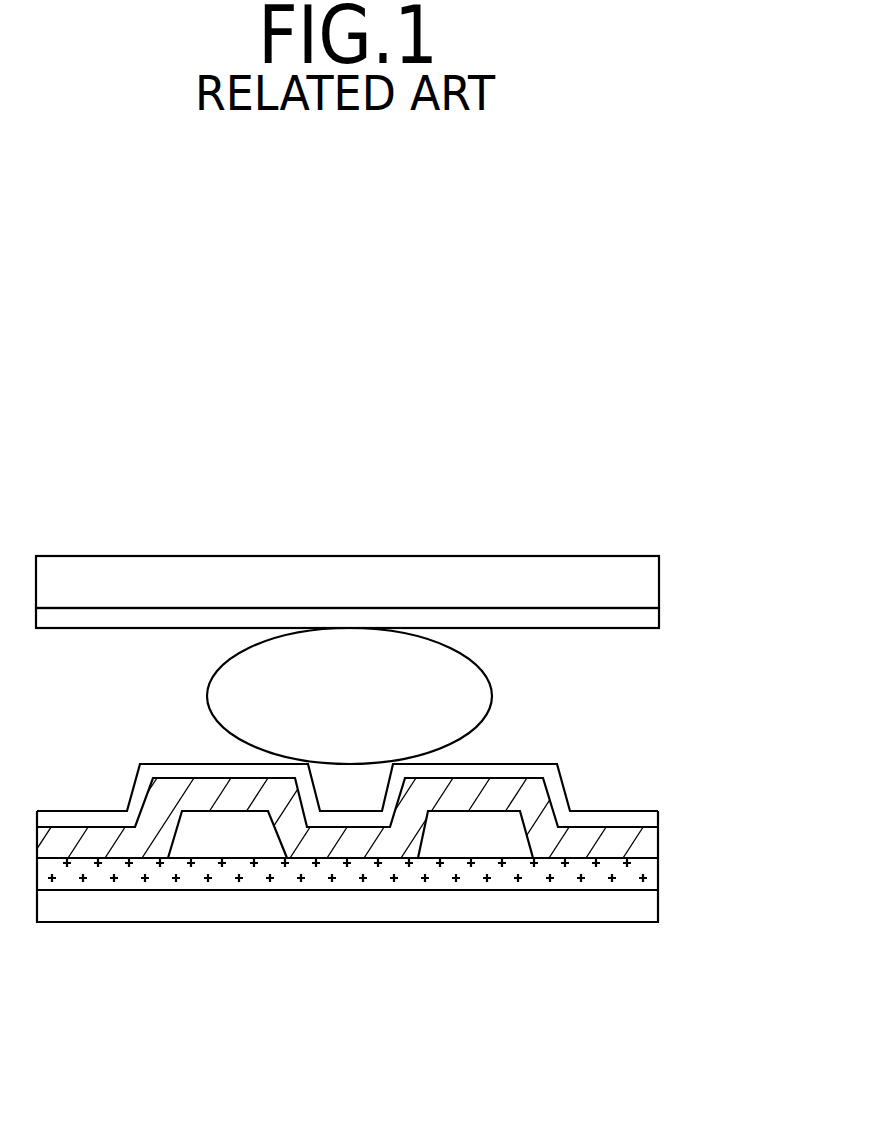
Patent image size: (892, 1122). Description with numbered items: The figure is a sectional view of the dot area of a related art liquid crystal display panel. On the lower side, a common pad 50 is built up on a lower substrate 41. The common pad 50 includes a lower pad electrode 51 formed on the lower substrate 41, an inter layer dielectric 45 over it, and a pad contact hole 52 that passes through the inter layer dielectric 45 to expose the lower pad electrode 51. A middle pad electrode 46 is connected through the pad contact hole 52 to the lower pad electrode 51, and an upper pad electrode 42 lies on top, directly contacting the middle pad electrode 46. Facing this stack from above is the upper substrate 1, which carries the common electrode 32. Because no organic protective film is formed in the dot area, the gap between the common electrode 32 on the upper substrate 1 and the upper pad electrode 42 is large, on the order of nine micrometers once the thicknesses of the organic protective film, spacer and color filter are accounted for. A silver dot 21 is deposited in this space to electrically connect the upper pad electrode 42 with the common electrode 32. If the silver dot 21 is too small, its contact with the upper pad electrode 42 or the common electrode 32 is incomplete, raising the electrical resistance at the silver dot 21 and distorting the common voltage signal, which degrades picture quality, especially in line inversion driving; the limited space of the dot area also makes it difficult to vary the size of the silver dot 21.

The upper substrate 1 is at (660, 584).
The common electrode 32 is at (660, 617).
The silver dot 21 is at (207, 700).
The lower substrate 41 is at (659, 908).
The upper pad electrode 42 is at (659, 820).
The inter layer dielectric 45 is at (198, 847).
The middle pad electrode 46 is at (572, 850).
The common pad 50 is at (538, 745).
The lower pad electrode 51 is at (425, 875).
The pad contact hole 52 is at (332, 858).